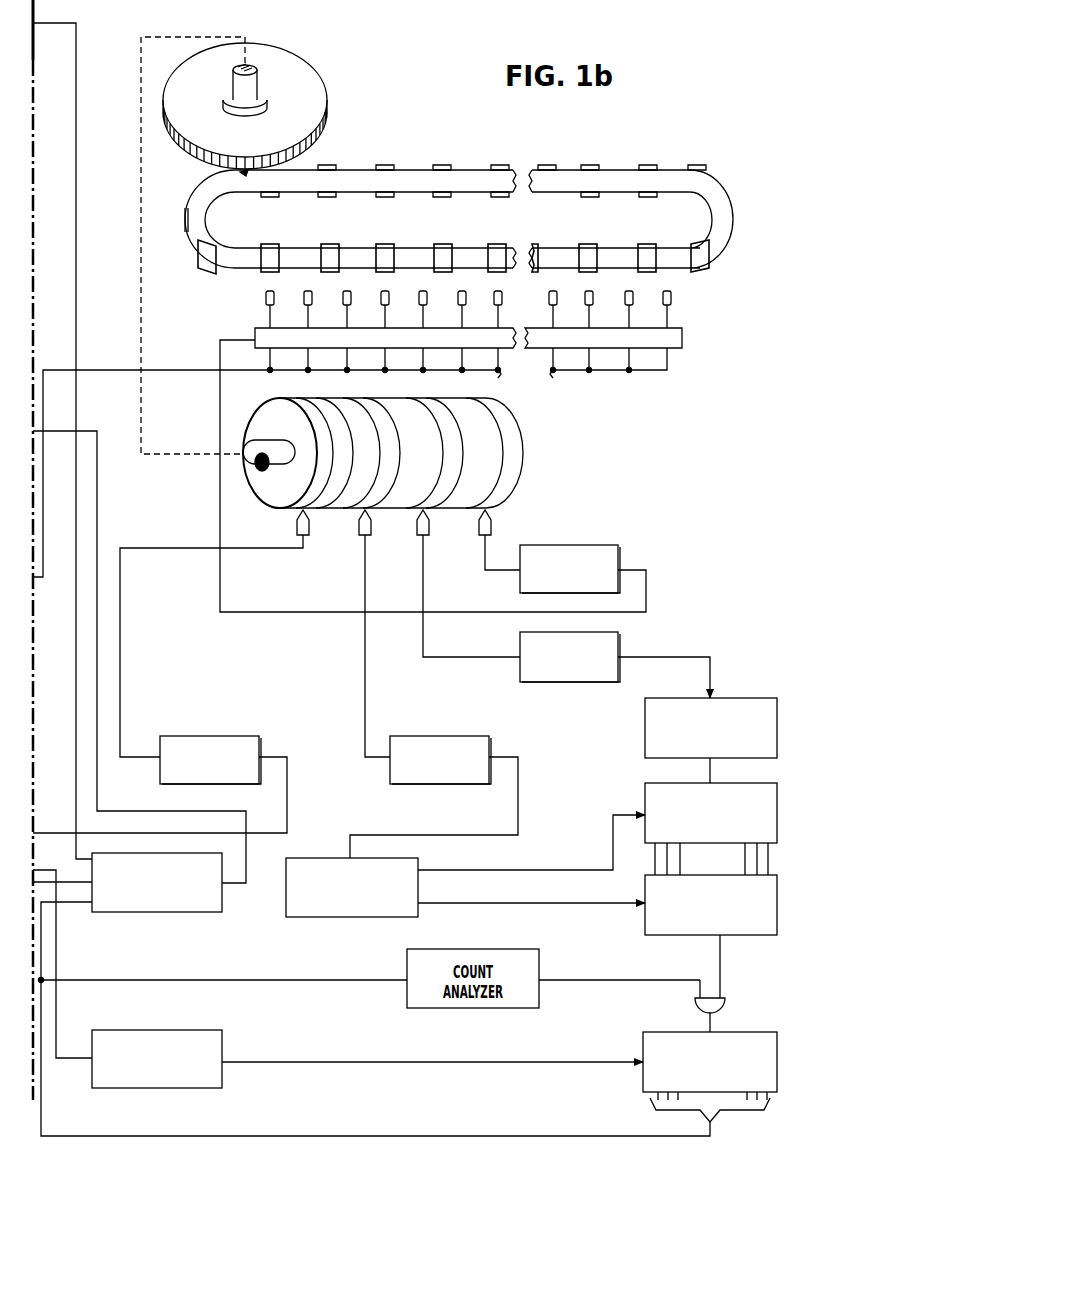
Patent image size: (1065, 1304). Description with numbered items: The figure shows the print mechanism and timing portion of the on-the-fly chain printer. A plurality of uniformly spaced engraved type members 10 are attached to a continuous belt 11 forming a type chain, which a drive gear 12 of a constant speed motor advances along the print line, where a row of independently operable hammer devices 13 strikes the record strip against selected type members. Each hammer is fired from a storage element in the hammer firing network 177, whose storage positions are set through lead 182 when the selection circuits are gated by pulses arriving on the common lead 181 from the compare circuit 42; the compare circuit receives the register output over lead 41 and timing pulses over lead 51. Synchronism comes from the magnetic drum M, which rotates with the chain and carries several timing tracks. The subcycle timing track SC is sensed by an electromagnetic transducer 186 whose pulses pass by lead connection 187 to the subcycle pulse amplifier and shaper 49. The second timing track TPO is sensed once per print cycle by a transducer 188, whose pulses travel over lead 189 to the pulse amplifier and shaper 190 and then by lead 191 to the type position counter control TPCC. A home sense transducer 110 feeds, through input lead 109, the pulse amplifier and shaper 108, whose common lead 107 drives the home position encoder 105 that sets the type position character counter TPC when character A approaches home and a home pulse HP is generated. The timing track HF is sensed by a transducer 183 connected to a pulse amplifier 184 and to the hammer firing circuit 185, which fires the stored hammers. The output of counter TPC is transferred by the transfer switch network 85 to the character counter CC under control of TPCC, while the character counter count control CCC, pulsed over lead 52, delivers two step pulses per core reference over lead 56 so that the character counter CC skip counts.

The type members 10 is at (338, 252).
The continuous belt 11 is at (450, 252).
The drive gear 12 is at (310, 78).
The hammer devices 13 is at (266, 298).
The hammer firing network 177 is at (682, 340).
The lead 41 is at (76, 316).
The common lead 181 is at (97, 536).
The lead 182 is at (43, 550).
The magnetic drum M is at (256, 493).
The subcycle timing track SC is at (343, 430).
The second timing track TPO is at (400, 436).
The home pulse HP is at (460, 445).
The timing track HF is at (520, 455).
The electromagnetic transducer 186 is at (297, 530).
The lead connection 187 is at (120, 686).
The transducer 188 is at (359, 530).
The lead 189 is at (365, 686).
The home sense transducer 110 is at (417, 530).
The input lead 109 is at (423, 598).
The transducer 183 is at (492, 528).
The pulse amplifier 184 is at (560, 545).
The hammer firing circuit 185 is at (646, 597).
The pulse amplifier and shaper 108 is at (520, 668).
The common lead 107 is at (650, 657).
The home position encoder 105 is at (645, 722).
The type position character counter TPC is at (645, 795).
The transfer switch network 85 is at (645, 925).
The character counter CC is at (643, 1036).
The lead 56 is at (395, 1063).
The compare circuit 42 is at (222, 903).
The lead 51 is at (62, 882).
The lead 52 is at (56, 980).
The character counter count control CCC is at (222, 1043).
The subcycle pulse amplifier and shaper 49 is at (215, 736).
The pulse amplifier and shaper 190 is at (445, 736).
The lead 191 is at (518, 816).
The type position counter control TPCC is at (318, 858).